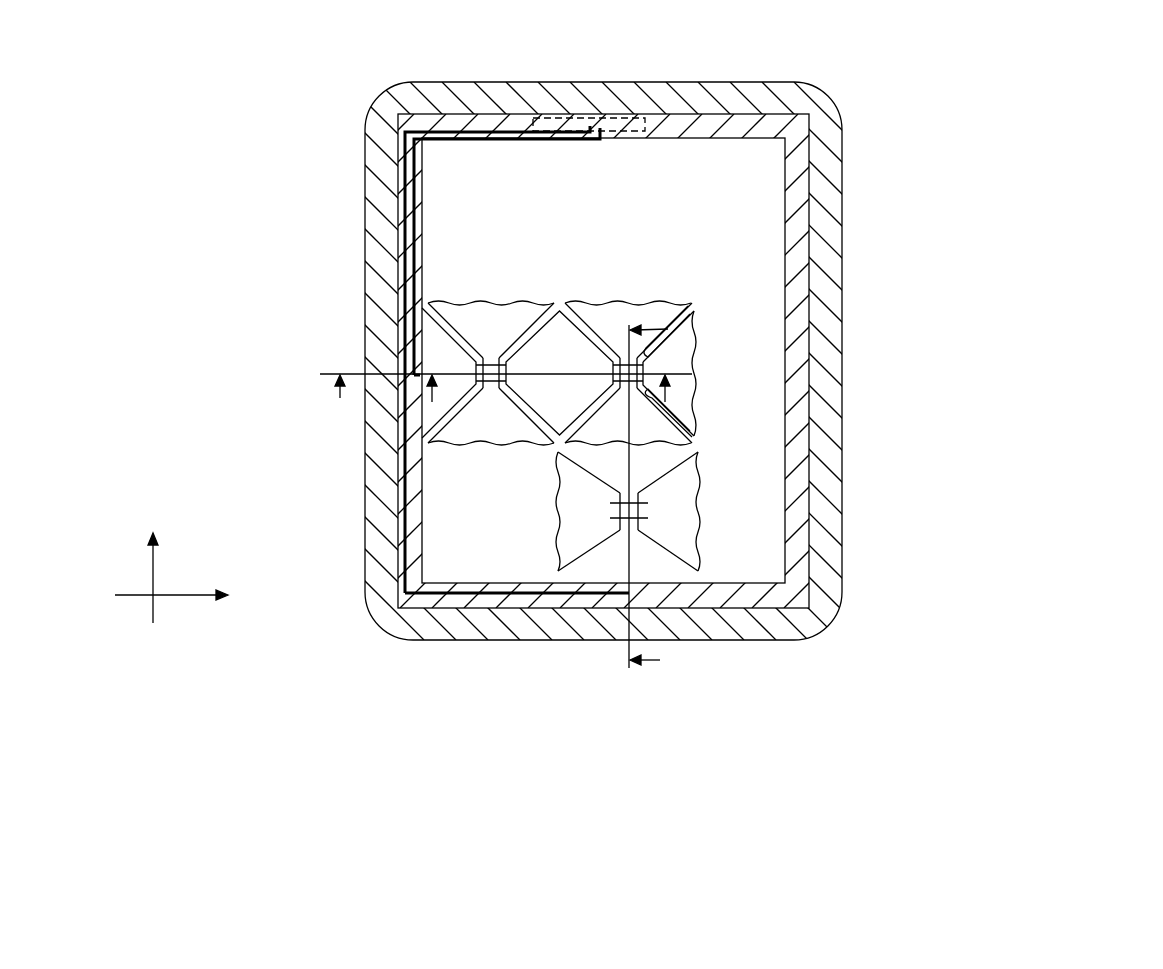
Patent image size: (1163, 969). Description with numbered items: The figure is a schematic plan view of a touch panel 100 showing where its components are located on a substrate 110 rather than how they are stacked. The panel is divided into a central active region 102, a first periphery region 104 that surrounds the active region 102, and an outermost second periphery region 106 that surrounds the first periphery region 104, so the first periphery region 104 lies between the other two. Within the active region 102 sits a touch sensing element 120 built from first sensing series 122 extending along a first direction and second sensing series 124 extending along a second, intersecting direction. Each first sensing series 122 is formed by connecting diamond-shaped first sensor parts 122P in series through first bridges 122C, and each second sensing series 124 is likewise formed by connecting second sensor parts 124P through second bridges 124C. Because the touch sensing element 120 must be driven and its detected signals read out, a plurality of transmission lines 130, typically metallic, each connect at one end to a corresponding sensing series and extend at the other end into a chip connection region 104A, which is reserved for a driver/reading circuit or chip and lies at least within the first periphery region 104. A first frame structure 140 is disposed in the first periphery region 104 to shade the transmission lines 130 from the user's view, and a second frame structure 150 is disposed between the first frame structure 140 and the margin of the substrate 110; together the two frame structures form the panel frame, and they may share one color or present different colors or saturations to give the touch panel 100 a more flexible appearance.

The touch panel 100 is at (1161, 679).
The active region 102 is at (747, 490).
The first periphery region 104 is at (790, 526).
The chip connection region 104A is at (645, 120).
The second periphery region 106 is at (823, 570).
The substrate 110 is at (843, 442).
The touch sensing element 120 is at (997, 262).
The first sensing series 122 is at (936, 320).
The first sensor part 122P is at (678, 350).
The first bridge 122C is at (693, 410).
The second sensing series 124 is at (936, 238).
The second sensor part 124P is at (607, 313).
The second bridge 124C is at (662, 330).
The transmission line 130 is at (405, 262).
The first frame structure 140 is at (800, 208).
The second frame structure 150 is at (835, 149).